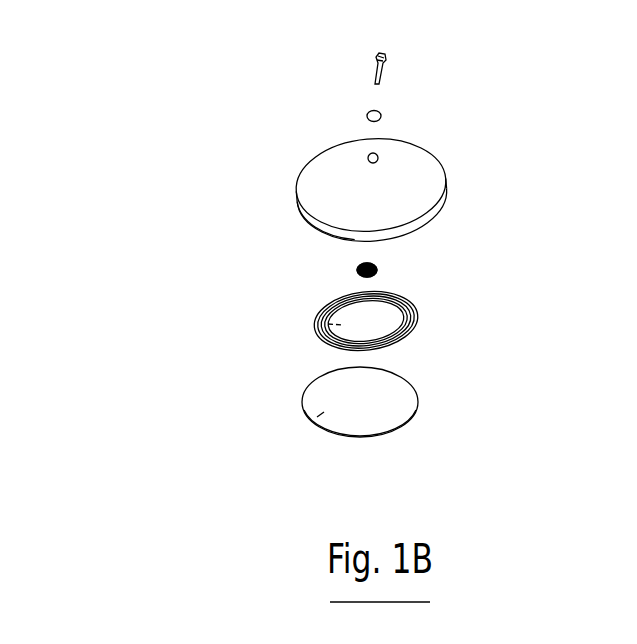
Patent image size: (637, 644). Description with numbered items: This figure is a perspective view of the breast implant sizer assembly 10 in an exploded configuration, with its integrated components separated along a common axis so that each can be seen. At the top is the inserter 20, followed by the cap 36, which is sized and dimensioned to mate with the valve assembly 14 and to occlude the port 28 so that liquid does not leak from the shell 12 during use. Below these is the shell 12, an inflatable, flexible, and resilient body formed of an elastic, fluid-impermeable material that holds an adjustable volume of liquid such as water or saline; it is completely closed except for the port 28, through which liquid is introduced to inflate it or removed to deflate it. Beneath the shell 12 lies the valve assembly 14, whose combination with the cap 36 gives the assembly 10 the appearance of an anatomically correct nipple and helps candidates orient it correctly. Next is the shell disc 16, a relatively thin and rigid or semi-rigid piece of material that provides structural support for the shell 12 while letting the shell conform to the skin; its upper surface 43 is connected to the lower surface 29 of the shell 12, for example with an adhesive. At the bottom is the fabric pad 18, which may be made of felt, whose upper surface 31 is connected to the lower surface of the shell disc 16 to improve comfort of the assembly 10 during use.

The breast implant sizer assembly 10 is at (89, 72).
The shell 12 is at (447, 200).
The valve assembly 14 is at (382, 274).
The shell disc 16 is at (412, 341).
The fabric pad 18 is at (417, 418).
The inserter 20 is at (385, 61).
The port 28 is at (378, 156).
The lower surface of the shell 29 is at (335, 232).
The upper surface of the fabric pad 31 is at (317, 417).
The cap 36 is at (381, 114).
The upper surface of the shell disc 43 is at (316, 326).